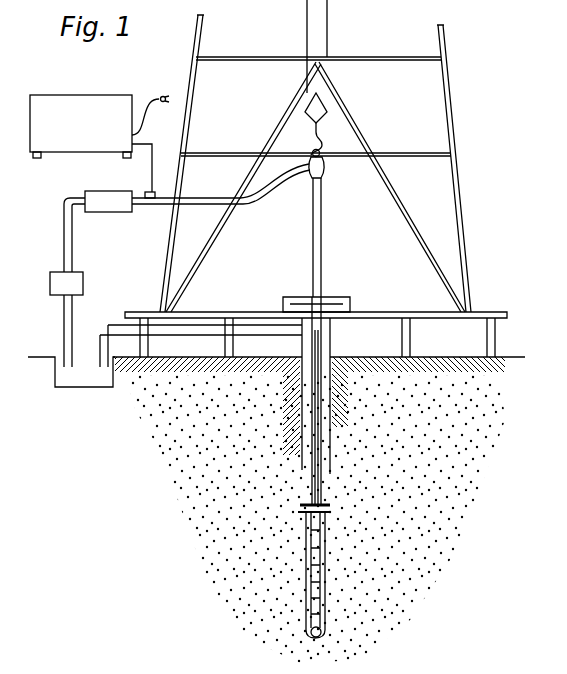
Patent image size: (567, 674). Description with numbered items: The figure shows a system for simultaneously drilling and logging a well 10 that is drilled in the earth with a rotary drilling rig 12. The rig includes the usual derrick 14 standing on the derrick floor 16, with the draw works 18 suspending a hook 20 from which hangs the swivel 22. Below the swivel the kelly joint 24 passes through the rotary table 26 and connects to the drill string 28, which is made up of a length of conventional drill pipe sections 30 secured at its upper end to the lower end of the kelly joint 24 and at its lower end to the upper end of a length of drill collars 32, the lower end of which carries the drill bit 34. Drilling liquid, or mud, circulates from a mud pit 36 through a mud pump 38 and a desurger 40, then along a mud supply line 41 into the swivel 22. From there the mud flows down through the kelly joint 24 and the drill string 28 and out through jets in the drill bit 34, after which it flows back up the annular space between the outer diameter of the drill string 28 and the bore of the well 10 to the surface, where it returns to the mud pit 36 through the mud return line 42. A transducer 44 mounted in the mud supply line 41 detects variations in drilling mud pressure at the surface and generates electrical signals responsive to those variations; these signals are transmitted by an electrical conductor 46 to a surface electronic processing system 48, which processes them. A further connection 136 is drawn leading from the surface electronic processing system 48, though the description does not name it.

The well 10 is at (300, 494).
The rotary drilling rig 12 is at (452, 79).
The derrick 14 is at (455, 122).
The derrick floor 16 is at (488, 312).
The draw works 18 is at (306, 38).
The hook 20 is at (324, 148).
The swivel 22 is at (308, 172).
The kelly joint 24 is at (322, 233).
The rotary table 26 is at (340, 297).
The drill string 28 is at (323, 478).
The drill pipe sections 30 is at (322, 494).
The drill collars 32 is at (323, 580).
The drill bit 34 is at (322, 634).
The mud pit 36 is at (83, 388).
The mud pump 38 is at (85, 281).
The desurger 40 is at (112, 191).
The mud supply line 41 is at (247, 200).
The mud return line 42 is at (258, 331).
The transducer 44 is at (154, 191).
The electrical conductor 46 is at (153, 160).
The surface electronic processing system 48 is at (86, 91).
The connector cable 136 is at (165, 93).